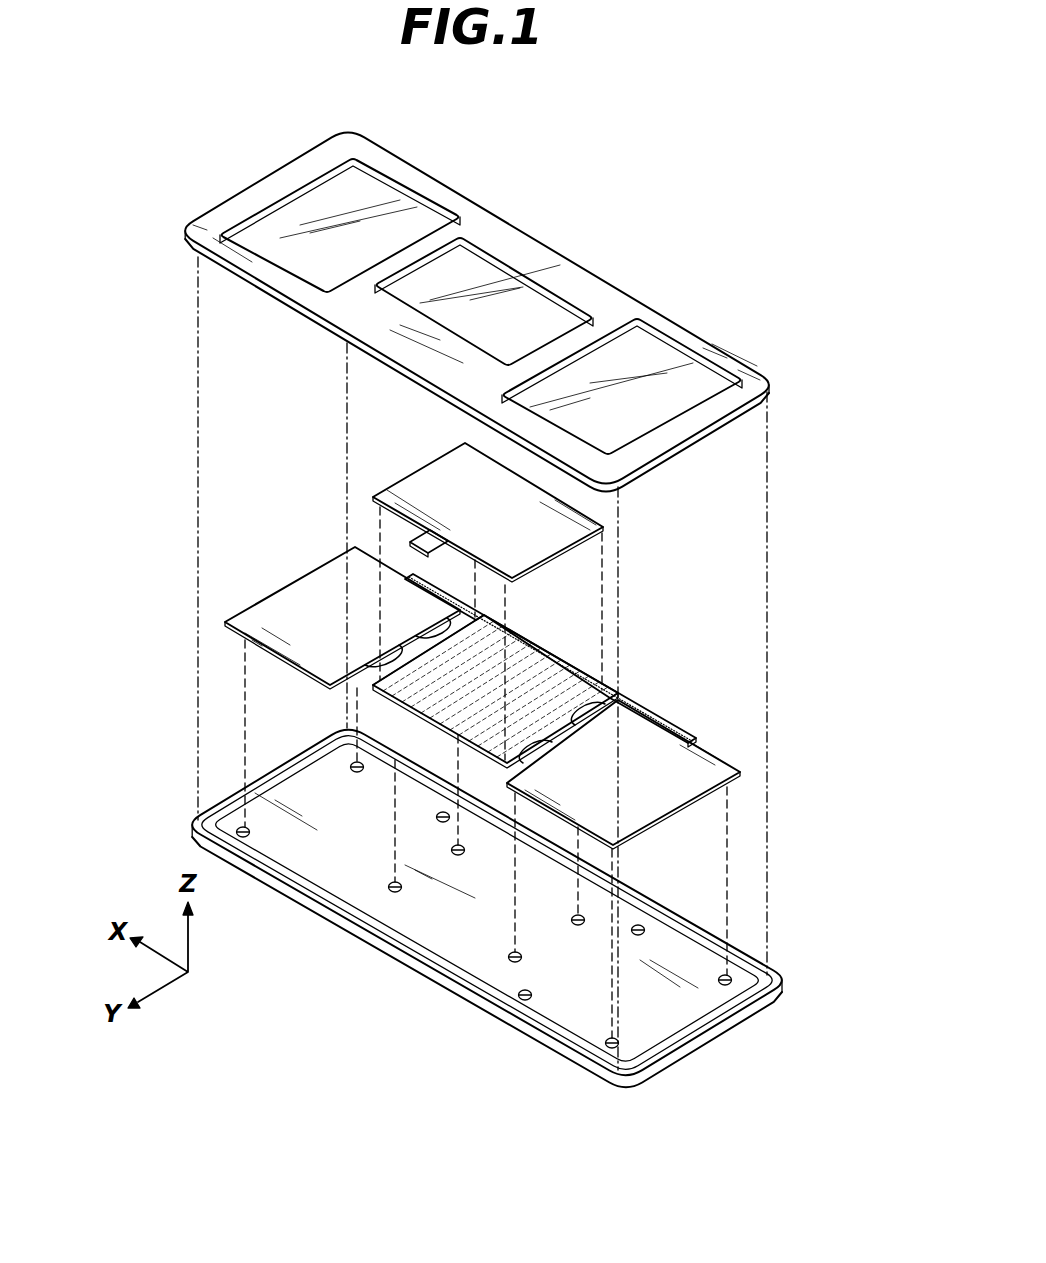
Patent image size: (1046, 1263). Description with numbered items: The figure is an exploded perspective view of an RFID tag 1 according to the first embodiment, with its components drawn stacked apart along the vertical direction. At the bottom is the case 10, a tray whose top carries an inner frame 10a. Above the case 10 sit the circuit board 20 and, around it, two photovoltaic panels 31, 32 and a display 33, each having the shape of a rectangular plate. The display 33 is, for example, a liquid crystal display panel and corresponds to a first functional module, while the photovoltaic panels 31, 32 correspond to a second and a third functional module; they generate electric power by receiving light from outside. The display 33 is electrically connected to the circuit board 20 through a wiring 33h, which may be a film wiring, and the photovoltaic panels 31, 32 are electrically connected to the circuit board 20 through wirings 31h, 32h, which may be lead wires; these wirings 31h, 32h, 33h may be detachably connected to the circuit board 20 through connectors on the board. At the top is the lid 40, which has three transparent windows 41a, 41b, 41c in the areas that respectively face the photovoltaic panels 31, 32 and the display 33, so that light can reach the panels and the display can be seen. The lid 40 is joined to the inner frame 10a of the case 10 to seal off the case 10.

The RFID tag 1 is at (740, 176).
The case 10 is at (484, 899).
The inner frame 10a is at (225, 805).
The circuit board 20 is at (605, 708).
The photovoltaic panel 31 is at (312, 604).
The wiring 31h is at (382, 668).
The photovoltaic panel 32 is at (652, 752).
The wiring 32h is at (548, 757).
The display 33 is at (450, 493).
The wiring 33h is at (425, 547).
The lid 40 is at (520, 242).
The transparent window 41a is at (350, 238).
The transparent window 41b is at (635, 398).
The transparent window 41c is at (518, 330).